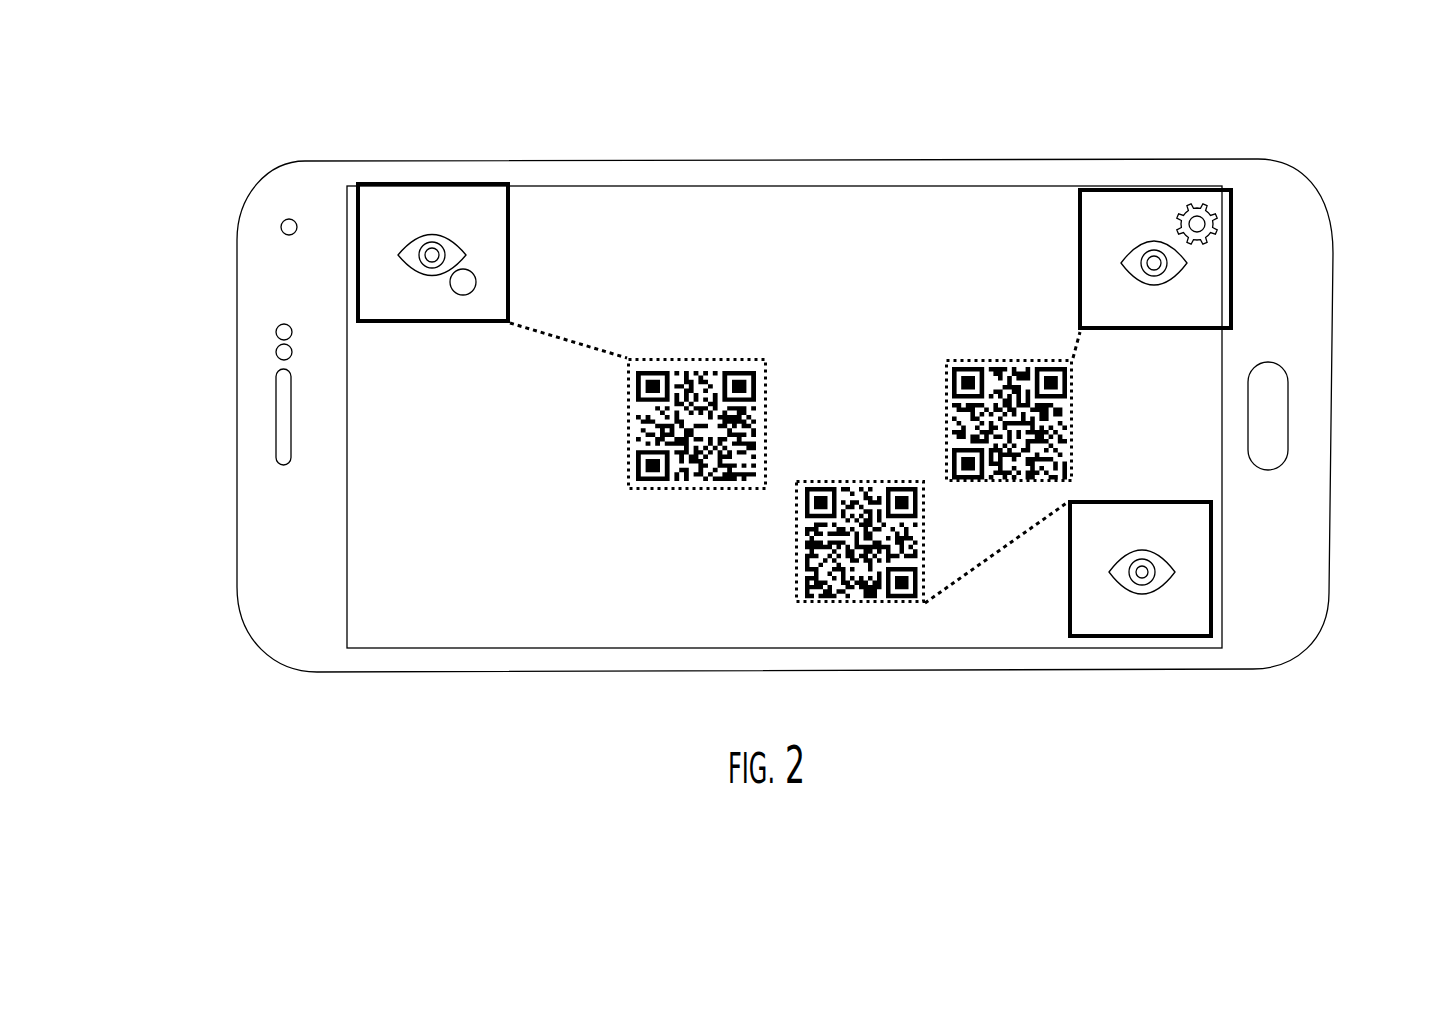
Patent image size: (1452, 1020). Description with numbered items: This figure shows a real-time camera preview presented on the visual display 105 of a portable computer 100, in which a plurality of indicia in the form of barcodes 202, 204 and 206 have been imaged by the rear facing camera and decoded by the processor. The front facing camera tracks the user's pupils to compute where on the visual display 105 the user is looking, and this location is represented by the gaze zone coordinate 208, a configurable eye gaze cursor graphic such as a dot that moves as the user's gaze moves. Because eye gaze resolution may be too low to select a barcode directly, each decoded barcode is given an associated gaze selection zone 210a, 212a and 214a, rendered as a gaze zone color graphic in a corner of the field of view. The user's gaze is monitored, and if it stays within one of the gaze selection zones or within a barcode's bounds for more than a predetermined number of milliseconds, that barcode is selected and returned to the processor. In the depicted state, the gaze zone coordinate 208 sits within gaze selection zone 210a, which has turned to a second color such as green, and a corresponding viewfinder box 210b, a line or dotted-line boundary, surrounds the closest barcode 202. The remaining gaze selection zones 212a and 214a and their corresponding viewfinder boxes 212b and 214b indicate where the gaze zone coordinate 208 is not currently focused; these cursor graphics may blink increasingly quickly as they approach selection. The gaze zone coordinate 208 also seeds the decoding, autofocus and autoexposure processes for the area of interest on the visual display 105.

The portable computer 100 is at (237, 577).
The visual display 105 is at (508, 441).
The barcode 202 is at (706, 368).
The barcode 204 is at (858, 480).
The barcode 206 is at (1003, 360).
The gaze zone coordinate 208 is at (475, 277).
The gaze selection zone 210a is at (357, 197).
The viewfinder box 210b is at (672, 493).
The gaze selection zone 212a is at (1233, 194).
The viewfinder box 212b is at (1073, 396).
The gaze selection zone 214a is at (1208, 537).
The viewfinder box 214b is at (923, 603).